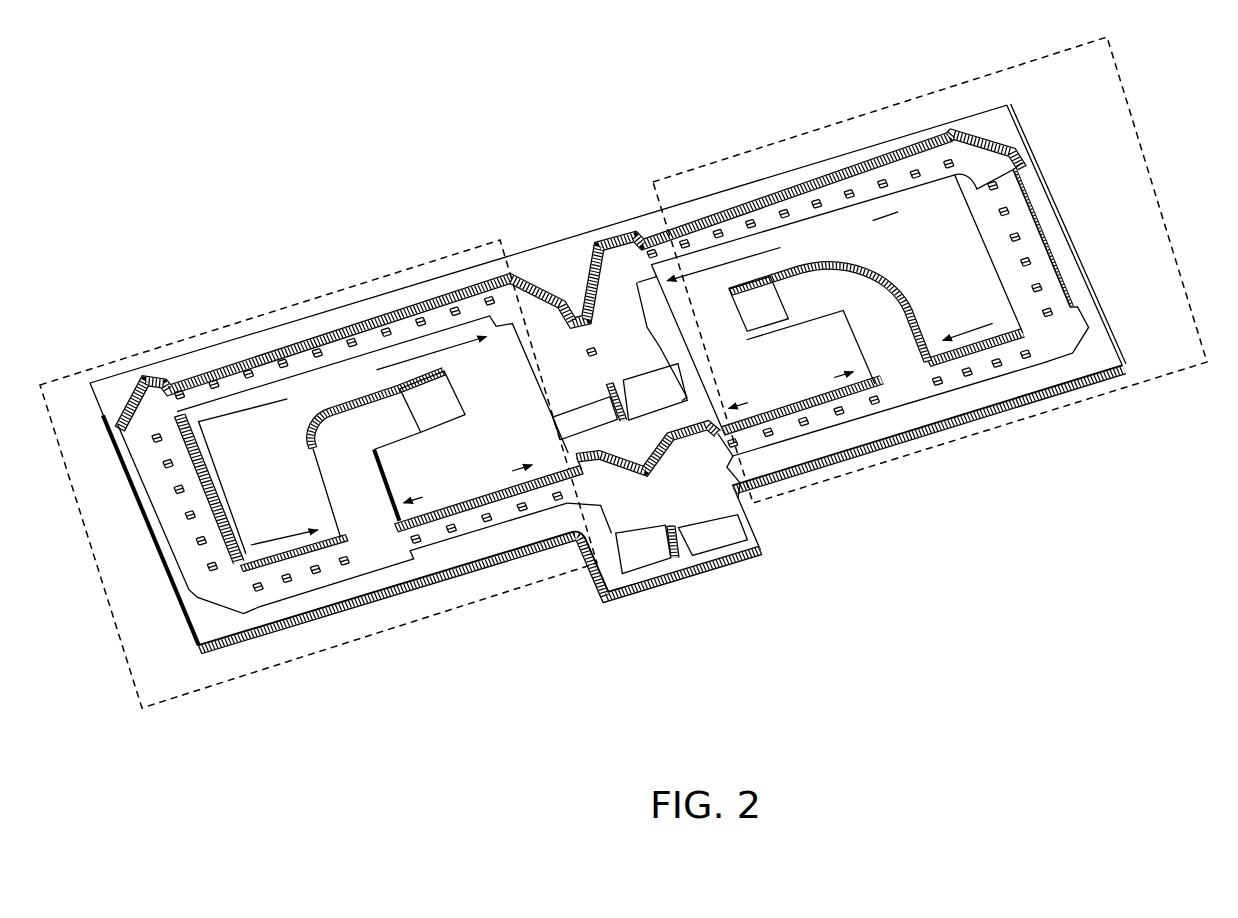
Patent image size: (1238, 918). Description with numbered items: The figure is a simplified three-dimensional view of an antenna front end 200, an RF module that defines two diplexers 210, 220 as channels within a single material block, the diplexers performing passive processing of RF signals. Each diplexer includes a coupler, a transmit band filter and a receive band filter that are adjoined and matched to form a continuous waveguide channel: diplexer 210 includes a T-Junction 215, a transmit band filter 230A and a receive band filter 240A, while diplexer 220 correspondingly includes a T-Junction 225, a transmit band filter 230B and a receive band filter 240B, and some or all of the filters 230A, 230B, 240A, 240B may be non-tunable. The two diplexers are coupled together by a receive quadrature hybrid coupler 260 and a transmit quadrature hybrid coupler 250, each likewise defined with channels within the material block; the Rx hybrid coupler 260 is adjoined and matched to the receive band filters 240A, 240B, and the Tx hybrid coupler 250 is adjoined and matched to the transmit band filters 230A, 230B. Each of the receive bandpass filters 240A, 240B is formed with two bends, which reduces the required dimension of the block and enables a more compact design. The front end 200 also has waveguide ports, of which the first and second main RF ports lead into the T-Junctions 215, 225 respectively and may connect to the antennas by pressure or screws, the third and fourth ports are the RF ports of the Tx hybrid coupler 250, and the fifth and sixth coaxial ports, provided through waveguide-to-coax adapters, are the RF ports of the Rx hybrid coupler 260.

The front end 200 is at (266, 171).
The diplexer 210 is at (172, 368).
The T-Junction 215 is at (318, 454).
The diplexer 220 is at (838, 135).
The T-Junction 225 is at (873, 288).
The transmit band filter 230A is at (467, 527).
The transmit band filter 230B is at (822, 413).
The receive band filter 240A is at (225, 585).
The receive band filter 240B is at (1055, 345).
The Tx quadrature hybrid coupler 250 is at (680, 513).
The Rx quadrature hybrid coupler 260 is at (607, 280).